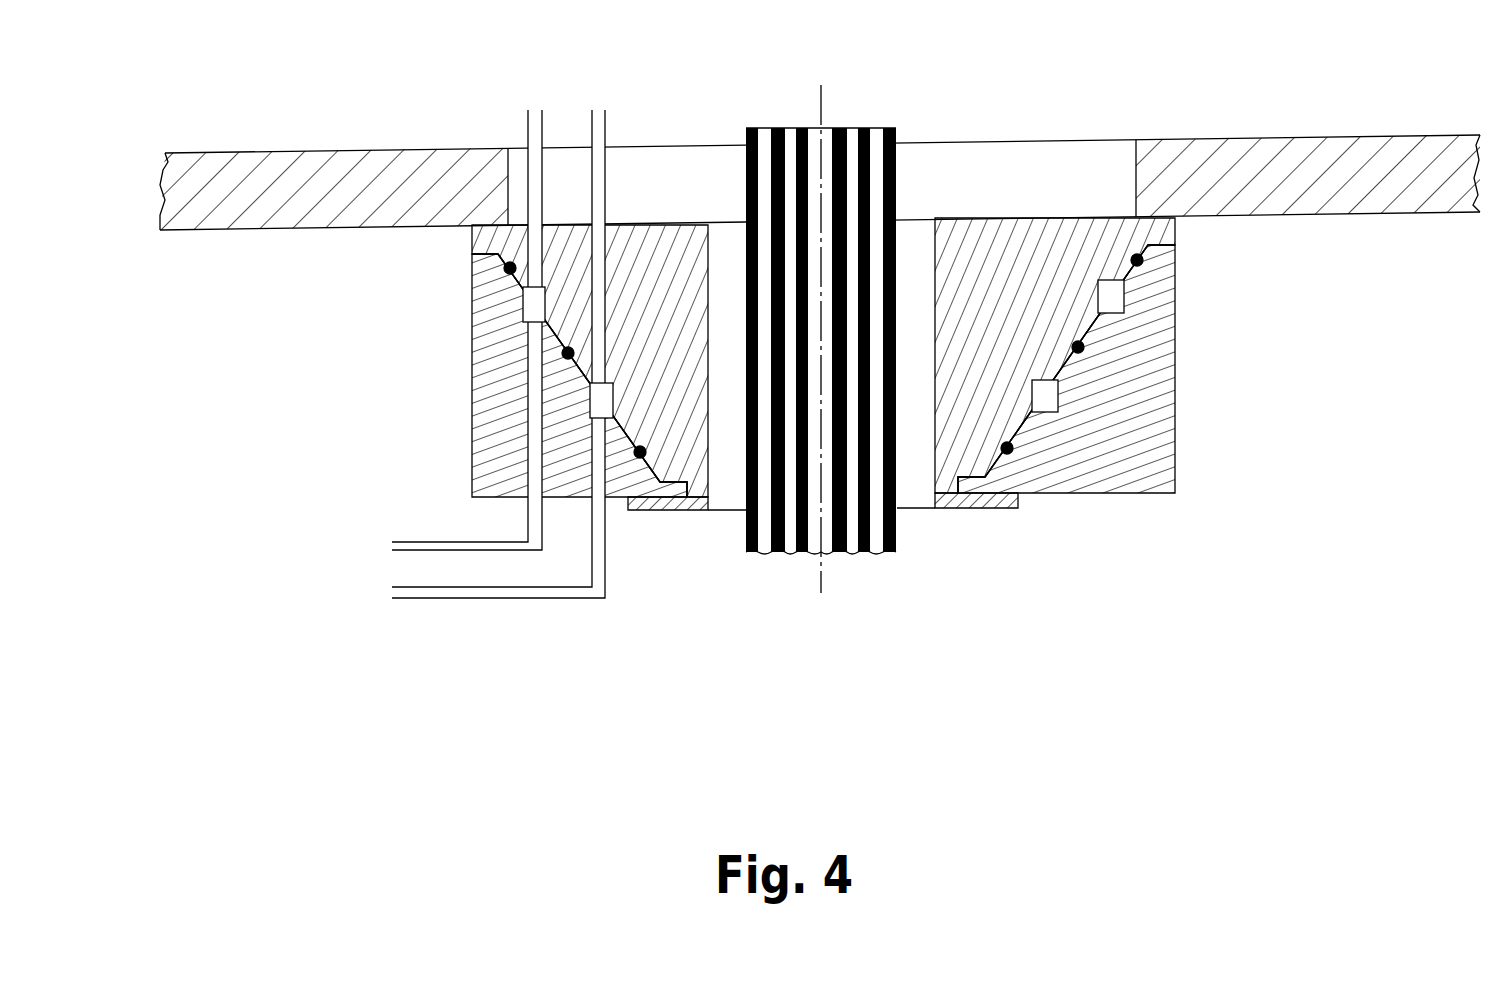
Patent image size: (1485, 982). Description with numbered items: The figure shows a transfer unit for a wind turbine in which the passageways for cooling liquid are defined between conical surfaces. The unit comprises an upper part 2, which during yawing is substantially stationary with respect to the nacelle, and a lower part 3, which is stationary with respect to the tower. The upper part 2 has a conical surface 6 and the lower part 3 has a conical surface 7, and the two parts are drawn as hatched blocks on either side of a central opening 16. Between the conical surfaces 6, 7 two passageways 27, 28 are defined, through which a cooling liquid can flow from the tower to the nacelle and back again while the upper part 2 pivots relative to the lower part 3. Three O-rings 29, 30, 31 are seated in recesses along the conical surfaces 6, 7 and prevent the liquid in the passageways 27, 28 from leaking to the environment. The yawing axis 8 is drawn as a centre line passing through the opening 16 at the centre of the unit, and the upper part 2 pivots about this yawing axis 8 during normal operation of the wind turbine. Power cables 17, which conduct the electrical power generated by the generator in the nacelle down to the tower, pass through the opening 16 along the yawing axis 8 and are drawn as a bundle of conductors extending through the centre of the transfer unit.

The upper part 2 is at (1040, 232).
The lower part 3 is at (1157, 453).
The conical surface 6 is at (1131, 260).
The conical surface 7 is at (1145, 352).
The yawing axis 8 is at (827, 87).
The opening 16 is at (913, 237).
The power cables 17 is at (798, 120).
The passageway 27 is at (1113, 300).
The passageway 28 is at (1043, 402).
The O-ring 29 is at (504, 270).
The O-ring 30 is at (562, 354).
The O-ring 31 is at (634, 454).